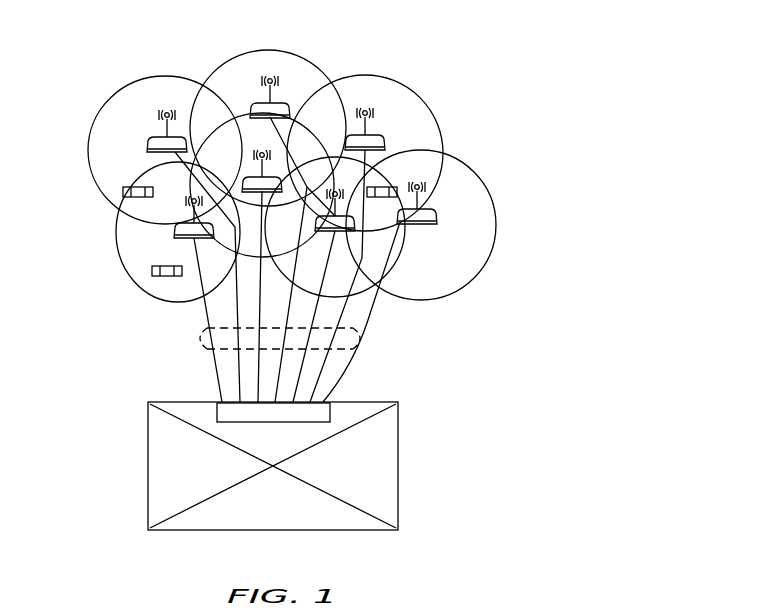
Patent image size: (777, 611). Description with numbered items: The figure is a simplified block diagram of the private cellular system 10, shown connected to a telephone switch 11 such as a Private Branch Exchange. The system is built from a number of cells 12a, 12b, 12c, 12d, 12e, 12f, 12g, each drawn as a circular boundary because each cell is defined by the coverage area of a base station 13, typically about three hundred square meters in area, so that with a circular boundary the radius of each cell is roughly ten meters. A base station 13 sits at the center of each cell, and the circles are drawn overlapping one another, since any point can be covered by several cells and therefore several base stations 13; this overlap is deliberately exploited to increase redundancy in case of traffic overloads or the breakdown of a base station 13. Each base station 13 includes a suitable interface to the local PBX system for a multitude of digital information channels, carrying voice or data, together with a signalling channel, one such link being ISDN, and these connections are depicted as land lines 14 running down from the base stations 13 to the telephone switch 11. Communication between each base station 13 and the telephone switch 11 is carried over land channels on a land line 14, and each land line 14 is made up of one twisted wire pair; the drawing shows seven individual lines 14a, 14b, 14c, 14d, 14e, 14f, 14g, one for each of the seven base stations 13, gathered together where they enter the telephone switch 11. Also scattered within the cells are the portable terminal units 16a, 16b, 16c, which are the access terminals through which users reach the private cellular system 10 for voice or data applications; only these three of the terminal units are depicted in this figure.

The private cellular system 10 is at (480, 322).
The telephone switch 11 is at (398, 470).
The cell 12a is at (129, 85).
The cell 12b is at (287, 49).
The cell 12c is at (406, 78).
The cell 12d is at (490, 194).
The cell 12e is at (370, 290).
The cell 12f is at (130, 283).
The cell 12g is at (303, 127).
The base station 13 is at (147, 146).
The land line 14 is at (192, 337).
The land line 14a is at (215, 364).
The land line 14b is at (239, 355).
The land line 14c is at (258, 304).
The land line 14d is at (297, 302).
The land line 14e is at (310, 320).
The land line 14f is at (330, 345).
The land line 14g is at (338, 382).
The portable terminal unit 16a is at (123, 191).
The portable terminal unit 16b is at (383, 187).
The portable terminal unit 16c is at (153, 272).